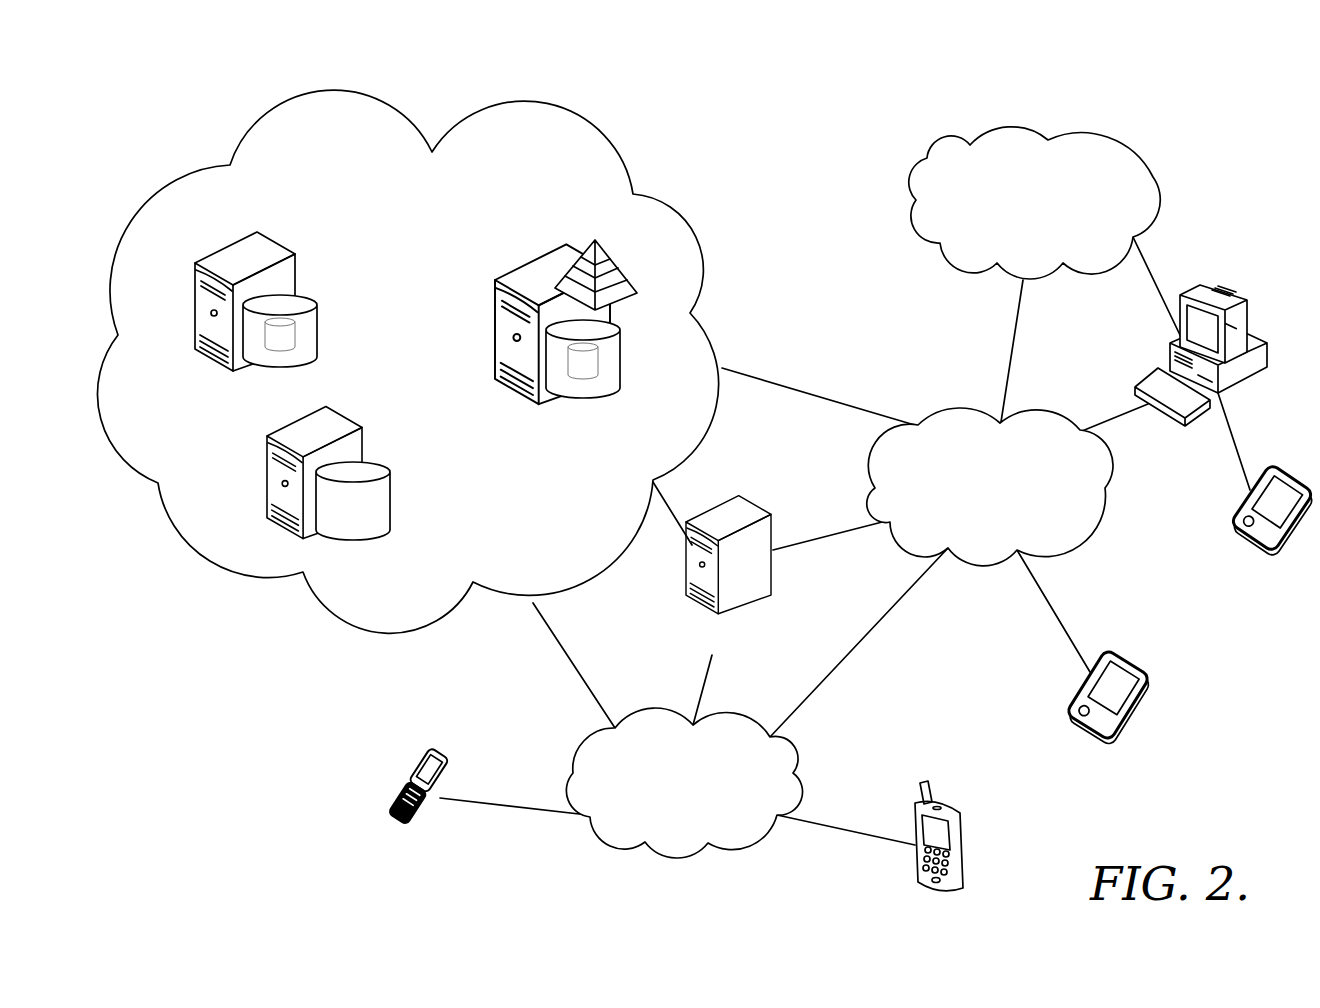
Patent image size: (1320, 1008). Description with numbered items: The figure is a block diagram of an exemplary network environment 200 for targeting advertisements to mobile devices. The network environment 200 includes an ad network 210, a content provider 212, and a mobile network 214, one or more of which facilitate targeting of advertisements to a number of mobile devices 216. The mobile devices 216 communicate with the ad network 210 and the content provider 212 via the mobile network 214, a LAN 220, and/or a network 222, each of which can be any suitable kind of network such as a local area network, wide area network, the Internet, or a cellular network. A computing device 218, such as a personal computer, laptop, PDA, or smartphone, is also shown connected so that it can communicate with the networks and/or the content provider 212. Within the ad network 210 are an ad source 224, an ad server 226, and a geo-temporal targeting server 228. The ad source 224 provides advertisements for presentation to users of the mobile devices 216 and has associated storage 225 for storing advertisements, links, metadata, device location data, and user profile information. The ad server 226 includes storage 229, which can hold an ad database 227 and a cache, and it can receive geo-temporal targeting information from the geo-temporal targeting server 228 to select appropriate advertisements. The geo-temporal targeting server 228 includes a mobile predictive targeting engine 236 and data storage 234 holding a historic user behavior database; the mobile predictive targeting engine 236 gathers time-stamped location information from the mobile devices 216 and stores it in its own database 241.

The network environment 200 is at (221, 98).
The ad network 210 is at (598, 134).
The content provider 212 is at (757, 502).
The mobile network 214 is at (680, 858).
The mobile devices 216 is at (1258, 558).
The computing device 218 is at (1228, 297).
The LAN 220 is at (1090, 132).
The network 222 is at (1076, 550).
The ad source 224 is at (193, 287).
The storage 225 is at (323, 280).
The ad server 226 is at (263, 472).
The ad database 227 is at (300, 333).
The geo-temporal targeting server 228 is at (530, 257).
The storage 229 is at (380, 463).
The data storage 234 is at (623, 343).
The mobile predictive targeting engine 236 is at (608, 262).
The database 241 is at (608, 362).